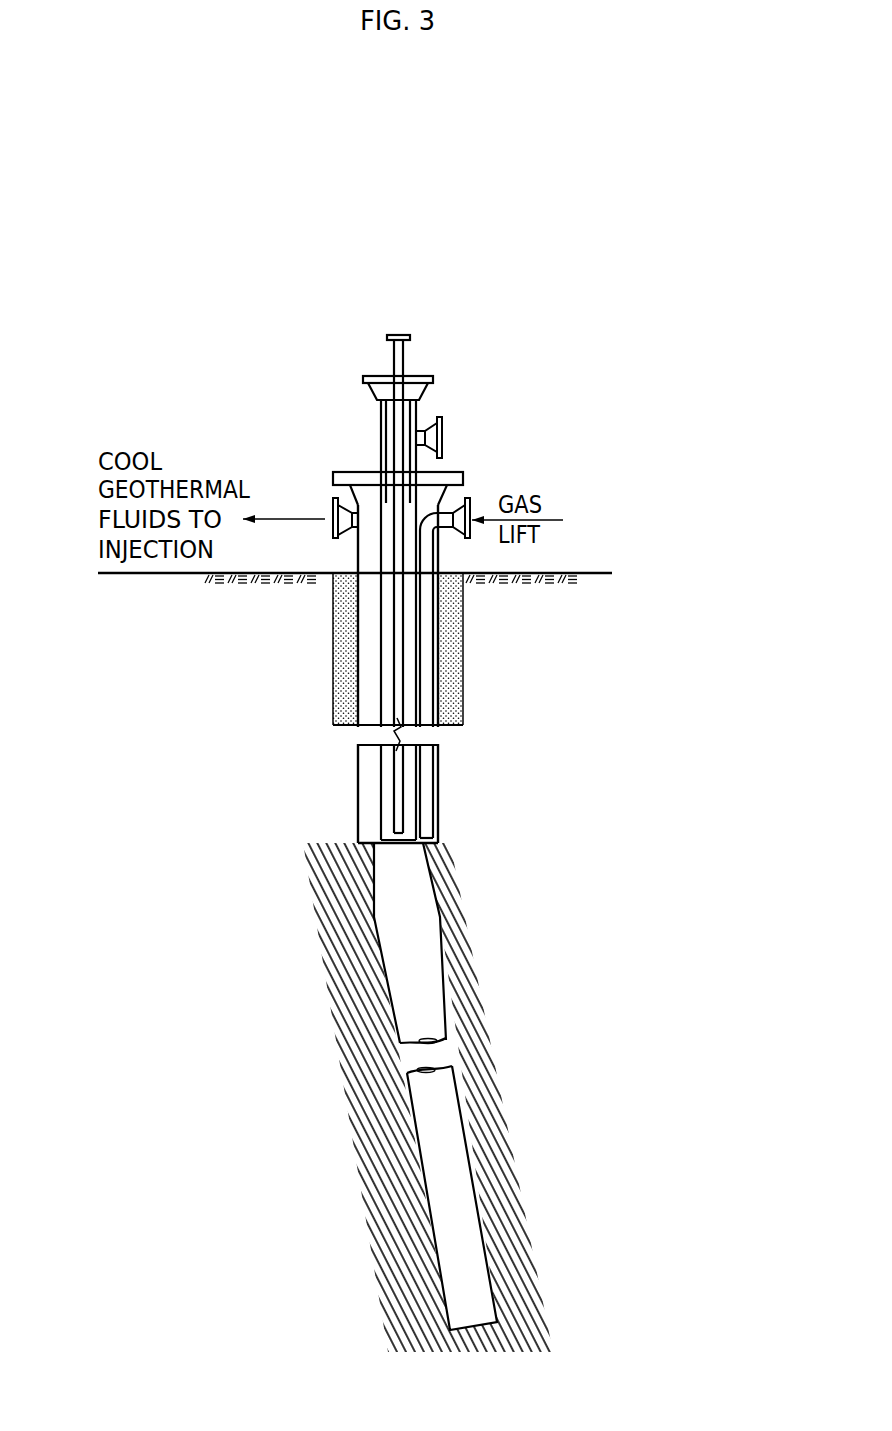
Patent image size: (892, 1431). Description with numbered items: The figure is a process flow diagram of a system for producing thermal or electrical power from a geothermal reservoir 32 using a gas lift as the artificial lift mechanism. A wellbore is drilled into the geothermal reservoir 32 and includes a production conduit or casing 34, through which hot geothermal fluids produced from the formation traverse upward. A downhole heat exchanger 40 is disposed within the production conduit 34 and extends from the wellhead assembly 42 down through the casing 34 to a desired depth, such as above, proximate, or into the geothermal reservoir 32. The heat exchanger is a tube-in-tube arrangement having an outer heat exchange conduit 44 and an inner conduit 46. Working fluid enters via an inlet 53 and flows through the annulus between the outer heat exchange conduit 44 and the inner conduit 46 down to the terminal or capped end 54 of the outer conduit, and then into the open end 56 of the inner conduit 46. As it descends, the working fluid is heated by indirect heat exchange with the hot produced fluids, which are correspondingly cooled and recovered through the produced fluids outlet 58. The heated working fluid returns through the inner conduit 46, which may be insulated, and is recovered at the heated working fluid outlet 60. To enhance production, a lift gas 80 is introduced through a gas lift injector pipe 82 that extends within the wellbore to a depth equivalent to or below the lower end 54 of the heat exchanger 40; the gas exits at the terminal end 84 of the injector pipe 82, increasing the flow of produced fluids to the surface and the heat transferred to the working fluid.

The geothermal reservoir 32 is at (497, 1080).
The production conduit or casing 34 is at (355, 666).
The downhole heat exchanger 40 is at (378, 372).
The wellhead assembly 42 is at (313, 420).
The outer heat exchange conduit 44 is at (421, 641).
The inner conduit 46 is at (406, 593).
The inlet 53 is at (440, 406).
The terminal or capped end 54 is at (402, 846).
The open end 56 is at (386, 843).
The produced fluids outlet 58 is at (333, 541).
The heated working fluid outlet 60 is at (411, 329).
The lift gas 80 is at (473, 495).
The gas lift injector pipe 82 is at (596, 675).
The terminal end 84 is at (437, 847).